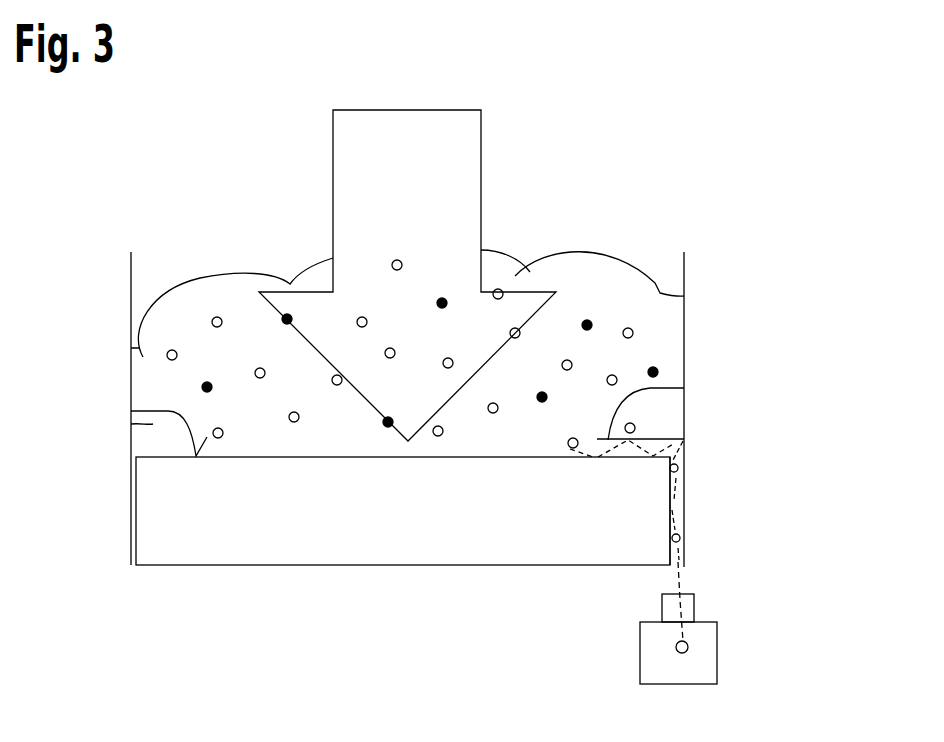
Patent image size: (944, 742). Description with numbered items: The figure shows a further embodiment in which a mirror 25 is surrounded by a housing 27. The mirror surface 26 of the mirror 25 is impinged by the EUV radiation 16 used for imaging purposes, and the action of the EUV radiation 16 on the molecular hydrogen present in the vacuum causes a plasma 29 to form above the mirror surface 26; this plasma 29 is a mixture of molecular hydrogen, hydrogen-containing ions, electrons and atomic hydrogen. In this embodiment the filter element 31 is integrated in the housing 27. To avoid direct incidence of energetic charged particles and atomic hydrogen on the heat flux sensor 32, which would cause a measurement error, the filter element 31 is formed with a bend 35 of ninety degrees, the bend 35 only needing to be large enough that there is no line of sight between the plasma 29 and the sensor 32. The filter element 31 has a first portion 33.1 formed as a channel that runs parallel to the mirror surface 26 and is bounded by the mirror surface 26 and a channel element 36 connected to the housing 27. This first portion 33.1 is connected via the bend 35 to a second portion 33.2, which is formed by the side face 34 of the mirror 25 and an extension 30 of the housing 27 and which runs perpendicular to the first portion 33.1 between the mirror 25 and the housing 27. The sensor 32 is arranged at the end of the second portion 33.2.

The EUV radiation 16 is at (417, 110).
The mirror 25 is at (340, 565).
The mirror surface 26 is at (131, 411).
The housing 27 is at (732, 276).
The plasma 29 is at (568, 272).
The extension of the housing 30 is at (685, 473).
The filter element 31 is at (690, 483).
The sensor 32 is at (717, 650).
The first portion 33.1 is at (628, 442).
The second portion 33.2 is at (686, 492).
The side face of the mirror 34 is at (670, 513).
The bend 35 is at (686, 438).
The channel element 36 is at (684, 388).